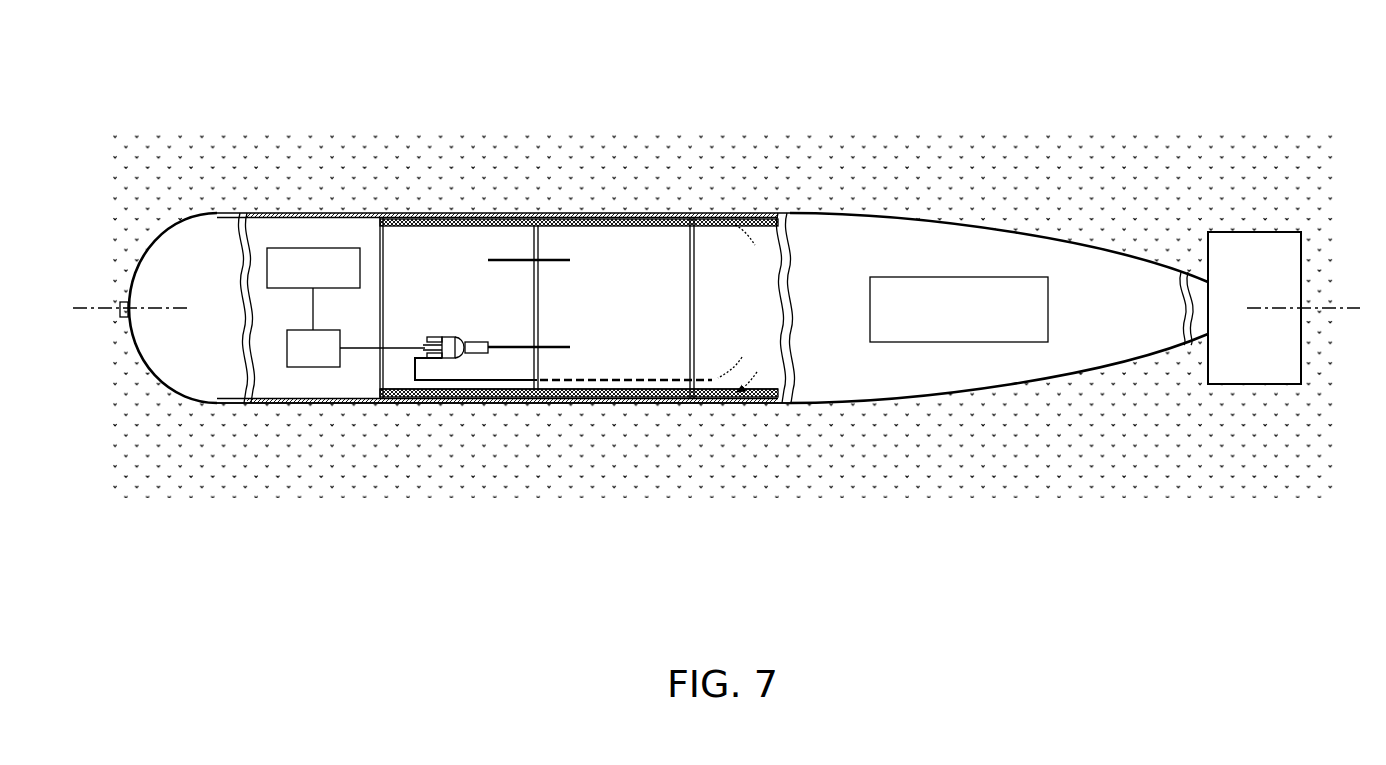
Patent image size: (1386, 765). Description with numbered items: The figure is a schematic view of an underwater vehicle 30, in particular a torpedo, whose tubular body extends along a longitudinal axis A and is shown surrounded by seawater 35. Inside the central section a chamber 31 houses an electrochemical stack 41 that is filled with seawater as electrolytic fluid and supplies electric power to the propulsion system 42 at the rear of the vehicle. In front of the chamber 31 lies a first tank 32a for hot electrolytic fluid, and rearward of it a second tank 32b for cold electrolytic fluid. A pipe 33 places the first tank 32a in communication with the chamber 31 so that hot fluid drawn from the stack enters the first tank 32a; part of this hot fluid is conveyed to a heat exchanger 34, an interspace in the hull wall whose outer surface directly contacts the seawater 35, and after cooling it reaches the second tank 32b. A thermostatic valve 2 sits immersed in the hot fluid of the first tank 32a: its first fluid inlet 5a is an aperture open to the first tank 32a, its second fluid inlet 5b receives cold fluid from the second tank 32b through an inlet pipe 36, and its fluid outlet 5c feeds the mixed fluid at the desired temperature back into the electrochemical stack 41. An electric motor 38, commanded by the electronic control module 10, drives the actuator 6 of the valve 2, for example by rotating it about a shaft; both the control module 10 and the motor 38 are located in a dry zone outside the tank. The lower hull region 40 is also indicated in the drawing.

The underwater vehicle 30 is at (196, 106).
The axis of longitudinal extension A is at (88, 305).
The seawater 35 is at (872, 182).
The first tank 32a is at (425, 232).
The second tank 32b is at (722, 232).
The pipe 33 is at (528, 250).
The heat exchanger 34 is at (563, 215).
The electrochemical stack 41 is at (632, 245).
The chamber 31 is at (686, 335).
The propulsion motor 42 is at (868, 288).
The electronic control module 10 is at (338, 282).
The electric motor 38 is at (287, 361).
The thermostatic valve 2 is at (452, 332).
The first fluid inlet 5a is at (438, 336).
The second fluid inlet 5b is at (436, 392).
The fluid outlet 5c is at (478, 341).
The actuator 6 is at (415, 360).
The inlet pipe 36 is at (498, 390).
The hull bottom 40 is at (357, 406).